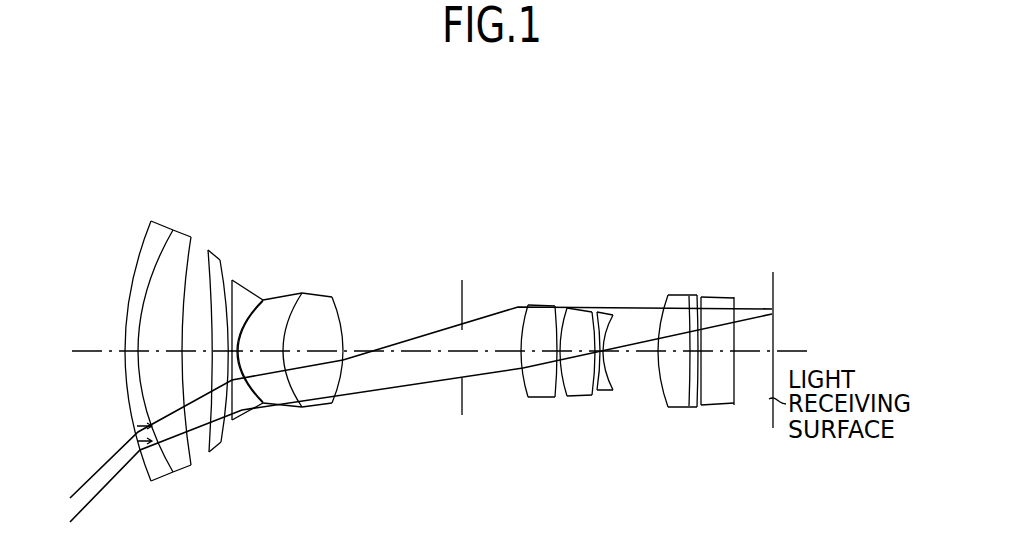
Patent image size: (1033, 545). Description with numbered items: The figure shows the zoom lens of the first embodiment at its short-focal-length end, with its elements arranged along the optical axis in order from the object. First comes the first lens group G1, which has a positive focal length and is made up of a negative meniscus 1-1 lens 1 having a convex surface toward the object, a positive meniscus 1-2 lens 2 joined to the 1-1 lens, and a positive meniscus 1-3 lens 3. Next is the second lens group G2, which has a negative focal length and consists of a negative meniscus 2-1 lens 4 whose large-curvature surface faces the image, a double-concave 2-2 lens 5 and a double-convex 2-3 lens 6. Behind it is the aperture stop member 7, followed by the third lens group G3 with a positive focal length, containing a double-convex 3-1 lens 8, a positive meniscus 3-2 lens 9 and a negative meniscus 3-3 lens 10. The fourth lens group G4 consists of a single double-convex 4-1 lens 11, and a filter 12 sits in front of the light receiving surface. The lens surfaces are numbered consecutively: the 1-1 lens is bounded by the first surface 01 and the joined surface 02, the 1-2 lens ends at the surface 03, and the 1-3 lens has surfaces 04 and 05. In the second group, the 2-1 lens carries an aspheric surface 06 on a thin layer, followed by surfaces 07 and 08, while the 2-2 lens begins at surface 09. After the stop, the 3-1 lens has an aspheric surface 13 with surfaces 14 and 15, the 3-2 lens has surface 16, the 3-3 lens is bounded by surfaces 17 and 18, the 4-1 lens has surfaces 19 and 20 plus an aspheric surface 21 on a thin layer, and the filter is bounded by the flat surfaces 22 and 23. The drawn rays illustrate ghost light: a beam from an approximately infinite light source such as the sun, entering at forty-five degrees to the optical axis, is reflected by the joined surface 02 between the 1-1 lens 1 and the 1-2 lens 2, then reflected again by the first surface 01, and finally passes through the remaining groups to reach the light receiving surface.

The first lens group G1 is at (150, 168).
The second lens group G2 is at (340, 224).
The third lens group G3 is at (552, 216).
The fourth lens group G4 is at (663, 232).
The 1-1 lens 1 is at (164, 224).
The 1-2 lens 2 is at (184, 232).
The 1-3 lens 3 is at (216, 252).
The 2-1 lens 4 is at (258, 297).
The 2-2 lens 5 is at (292, 294).
The 2-3 lens 6 is at (334, 297).
The aperture stop member 7 is at (463, 282).
The 3-1 lens 8 is at (540, 305).
The 3-2 lens 9 is at (582, 310).
The 3-3 lens 10 is at (606, 314).
The 4-1 lens 11 is at (672, 296).
The filter 12 is at (716, 298).
The first surface 01 is at (145, 465).
The joined surface 02 is at (172, 473).
The third surface 03 is at (198, 465).
The fourth surface 04 is at (209, 447).
The fifth surface 05 is at (223, 432).
The sixth surface 06 is at (229, 280).
The seventh surface 07 is at (233, 412).
The eighth surface 08 is at (262, 301).
The ninth surface 09 is at (261, 307).
The thirteenth surface 13 is at (522, 327).
The fourteenth surface 14 is at (522, 388).
The fifteenth surface 15 is at (551, 393).
The sixteenth surface 16 is at (573, 398).
The seventeenth surface 17 is at (590, 388).
The eighteenth surface 18 is at (609, 378).
The nineteenth surface 19 is at (665, 407).
The twentieth surface 20 is at (688, 408).
The twenty-first surface 21 is at (696, 297).
The twenty-second surface 22 is at (703, 407).
The twenty-third surface 23 is at (734, 406).